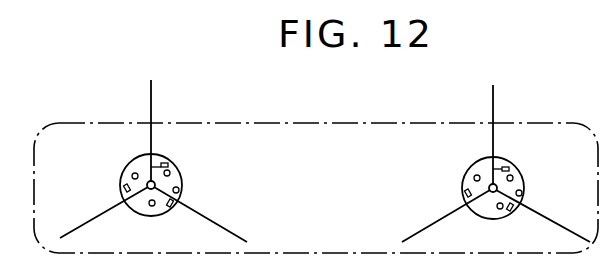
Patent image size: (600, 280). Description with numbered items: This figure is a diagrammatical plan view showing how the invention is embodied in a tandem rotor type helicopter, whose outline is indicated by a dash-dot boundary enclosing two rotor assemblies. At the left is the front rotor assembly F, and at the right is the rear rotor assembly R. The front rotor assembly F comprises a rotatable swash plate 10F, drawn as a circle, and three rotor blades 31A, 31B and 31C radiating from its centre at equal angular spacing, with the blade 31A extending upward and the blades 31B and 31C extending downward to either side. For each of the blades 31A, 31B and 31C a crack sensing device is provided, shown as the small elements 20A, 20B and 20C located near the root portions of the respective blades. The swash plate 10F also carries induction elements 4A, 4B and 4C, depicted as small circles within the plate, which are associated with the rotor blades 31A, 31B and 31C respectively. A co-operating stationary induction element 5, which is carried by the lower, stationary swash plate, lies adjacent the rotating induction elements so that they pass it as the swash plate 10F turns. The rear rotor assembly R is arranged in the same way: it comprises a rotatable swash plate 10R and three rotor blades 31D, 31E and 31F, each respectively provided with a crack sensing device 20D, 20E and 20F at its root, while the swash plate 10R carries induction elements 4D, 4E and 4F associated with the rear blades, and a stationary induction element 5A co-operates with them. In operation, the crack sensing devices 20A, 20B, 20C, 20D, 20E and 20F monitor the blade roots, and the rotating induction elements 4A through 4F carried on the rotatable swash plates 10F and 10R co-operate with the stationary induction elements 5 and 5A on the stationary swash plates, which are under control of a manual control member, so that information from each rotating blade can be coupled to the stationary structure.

The front rotor assembly F is at (161, 149).
The rear rotor assembly R is at (503, 150).
The rotatable swash plate 10F is at (129, 172).
The rotatable swash plate 10R is at (467, 175).
The rotor blade 31A is at (151, 96).
The rotor blade 31B is at (226, 212).
The rotor blade 31C is at (86, 222).
The rotor blade 31D is at (493, 96).
The rotor blade 31E is at (562, 216).
The rotor blade 31F is at (410, 236).
The induction element 4A is at (170, 174).
The induction element 4B is at (149, 205).
The induction element 4C is at (135, 173).
The induction element 4D is at (513, 178).
The induction element 4E is at (497, 207).
The induction element 4F is at (477, 175).
The stationary induction element 5 is at (179, 190).
The stationary induction element 5A is at (522, 193).
The crack sensing device 20A is at (168, 165).
The crack sensing device 20B is at (171, 207).
The crack sensing device 20C is at (124, 189).
The crack sensing device 20D is at (509, 167).
The crack sensing device 20E is at (511, 210).
The crack sensing device 20F is at (465, 193).